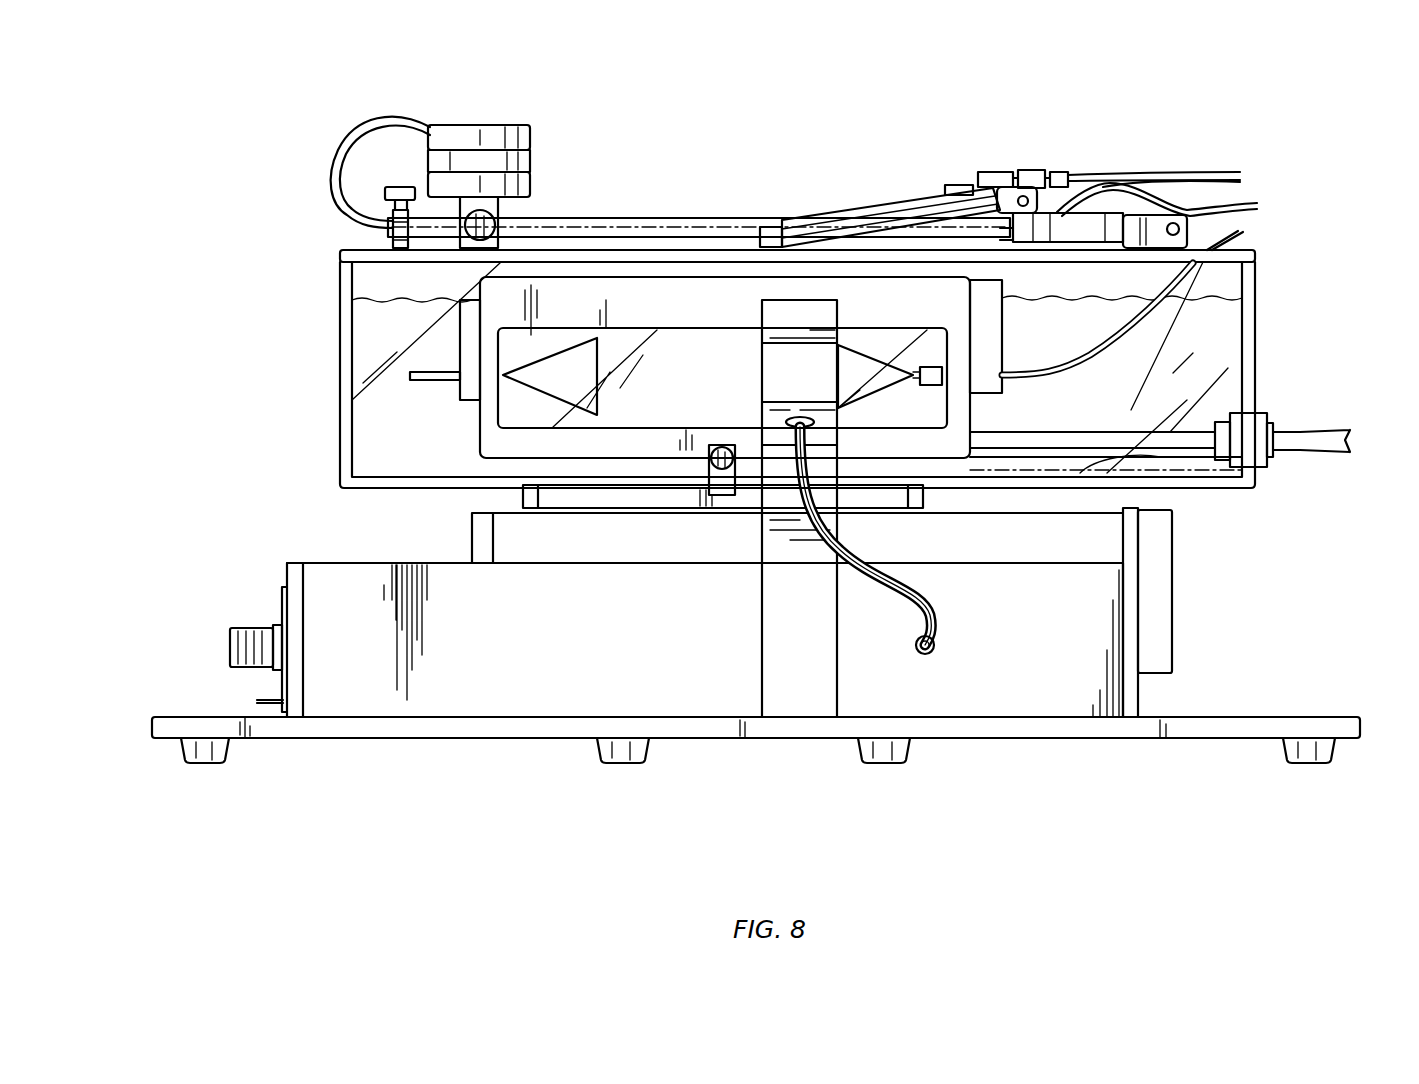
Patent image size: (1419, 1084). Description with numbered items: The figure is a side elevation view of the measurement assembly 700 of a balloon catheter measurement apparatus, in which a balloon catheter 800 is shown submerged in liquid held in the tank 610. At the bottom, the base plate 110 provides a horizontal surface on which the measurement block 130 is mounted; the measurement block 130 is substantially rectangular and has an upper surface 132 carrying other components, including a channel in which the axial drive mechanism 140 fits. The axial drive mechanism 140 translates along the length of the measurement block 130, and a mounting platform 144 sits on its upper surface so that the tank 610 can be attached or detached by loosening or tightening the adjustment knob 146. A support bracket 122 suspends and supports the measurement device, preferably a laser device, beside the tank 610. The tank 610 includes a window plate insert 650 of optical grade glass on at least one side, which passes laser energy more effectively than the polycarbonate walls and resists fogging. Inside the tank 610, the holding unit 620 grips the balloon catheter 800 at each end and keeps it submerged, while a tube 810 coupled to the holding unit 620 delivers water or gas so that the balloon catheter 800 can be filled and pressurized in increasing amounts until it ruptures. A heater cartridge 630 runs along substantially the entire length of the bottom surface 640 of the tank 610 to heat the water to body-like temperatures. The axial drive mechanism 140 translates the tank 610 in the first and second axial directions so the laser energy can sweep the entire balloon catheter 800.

The measurement assembly 700 is at (786, 137).
The base plate 110 is at (188, 722).
The support bracket 122 is at (805, 695).
The measurement block 130 is at (340, 705).
The upper surface 132 is at (318, 568).
The axial drive mechanism 140 is at (1108, 530).
The mounting platform 144 is at (527, 500).
The adjustment knob 146 is at (727, 467).
The tank 610 is at (1222, 333).
The holding unit 620 is at (462, 337).
The heater cartridge 630 is at (1180, 440).
The bottom surface 640 is at (1088, 470).
The window plate insert 650 is at (650, 295).
The balloon catheter 800 is at (563, 352).
The tube 810 is at (1180, 284).